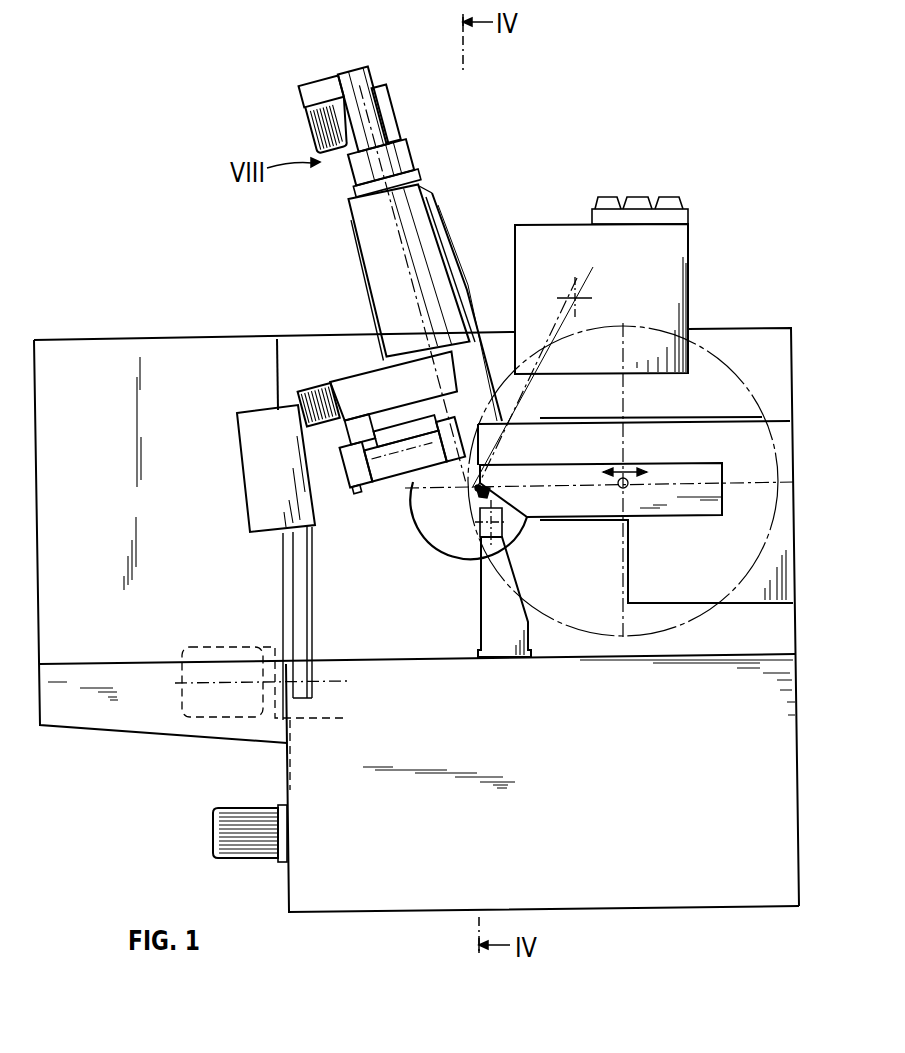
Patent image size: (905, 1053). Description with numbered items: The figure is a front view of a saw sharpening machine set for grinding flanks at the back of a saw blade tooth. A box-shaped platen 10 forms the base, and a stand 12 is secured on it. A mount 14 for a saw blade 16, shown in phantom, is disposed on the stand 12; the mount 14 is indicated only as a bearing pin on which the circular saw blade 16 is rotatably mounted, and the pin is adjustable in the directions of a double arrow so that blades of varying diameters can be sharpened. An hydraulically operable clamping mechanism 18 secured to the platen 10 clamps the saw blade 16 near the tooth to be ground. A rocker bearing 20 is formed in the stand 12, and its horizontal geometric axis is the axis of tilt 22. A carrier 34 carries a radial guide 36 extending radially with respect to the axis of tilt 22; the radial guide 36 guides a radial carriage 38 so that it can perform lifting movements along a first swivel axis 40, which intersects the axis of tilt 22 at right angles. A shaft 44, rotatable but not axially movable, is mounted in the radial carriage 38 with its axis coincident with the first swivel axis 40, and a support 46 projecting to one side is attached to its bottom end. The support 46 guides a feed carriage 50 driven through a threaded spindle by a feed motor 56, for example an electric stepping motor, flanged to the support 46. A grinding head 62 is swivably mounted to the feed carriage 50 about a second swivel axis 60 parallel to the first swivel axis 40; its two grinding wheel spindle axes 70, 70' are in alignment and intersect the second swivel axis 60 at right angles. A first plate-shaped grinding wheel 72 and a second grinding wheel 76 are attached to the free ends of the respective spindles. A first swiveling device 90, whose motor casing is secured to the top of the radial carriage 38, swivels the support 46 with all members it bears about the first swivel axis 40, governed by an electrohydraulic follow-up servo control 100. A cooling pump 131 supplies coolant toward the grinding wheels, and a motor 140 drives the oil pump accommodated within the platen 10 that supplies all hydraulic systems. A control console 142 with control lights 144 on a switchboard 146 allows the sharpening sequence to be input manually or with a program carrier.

The platen 10 is at (687, 898).
The stand 12 is at (745, 347).
The mount 14 is at (628, 487).
The saw blade 16 is at (695, 623).
The clamping mechanism 18 is at (498, 591).
The rocker bearing 20 is at (435, 526).
The axis of tilt 22 is at (473, 490).
The carrier 34 is at (476, 360).
The radial guide 36 is at (445, 228).
The radial carriage 38 is at (367, 207).
The first swivel axis 40 is at (402, 247).
The shaft 44 is at (378, 296).
The support 46 is at (367, 393).
The feed carriage 50 is at (358, 430).
The feed motor 56 is at (307, 392).
The second swivel axis 60 is at (388, 382).
The grinding head 62 is at (397, 465).
The grinding wheel spindle axis 70 is at (459, 419).
The grinding wheel spindle axis 70' is at (340, 465).
The first grinding wheel 72 is at (485, 463).
The second grinding wheel 76 is at (360, 493).
The first swiveling device 90 is at (424, 144).
The electrohydraulic follow-up servo control 100 is at (362, 87).
The cooling pump 131 is at (213, 832).
The motor 140 is at (197, 735).
The control console 142 is at (677, 273).
The control lights 144 is at (673, 202).
The switchboard 146 is at (262, 475).